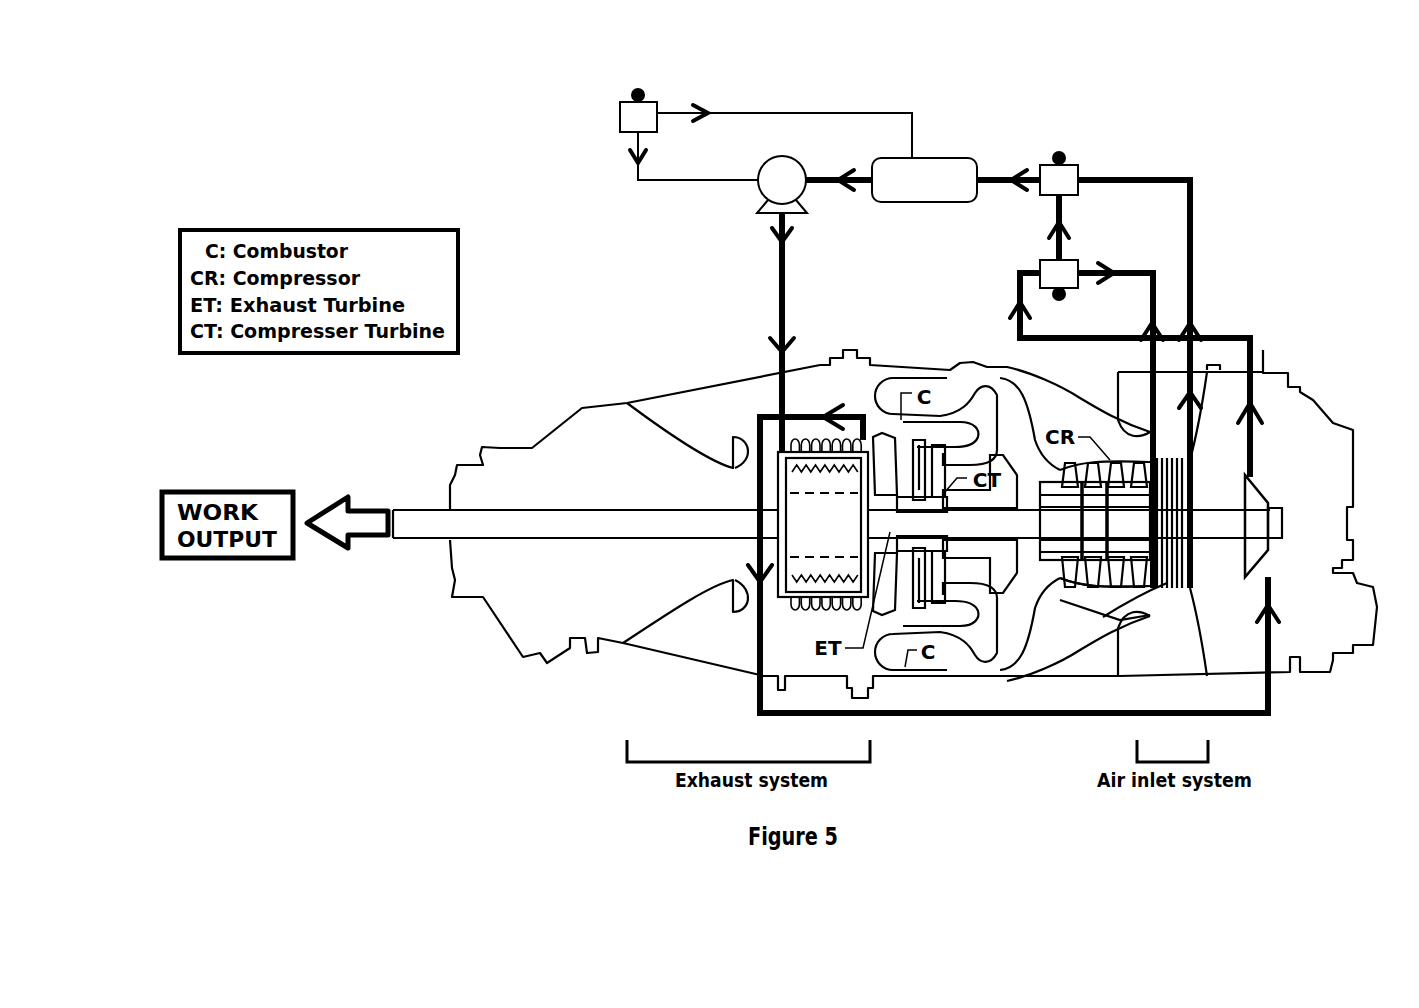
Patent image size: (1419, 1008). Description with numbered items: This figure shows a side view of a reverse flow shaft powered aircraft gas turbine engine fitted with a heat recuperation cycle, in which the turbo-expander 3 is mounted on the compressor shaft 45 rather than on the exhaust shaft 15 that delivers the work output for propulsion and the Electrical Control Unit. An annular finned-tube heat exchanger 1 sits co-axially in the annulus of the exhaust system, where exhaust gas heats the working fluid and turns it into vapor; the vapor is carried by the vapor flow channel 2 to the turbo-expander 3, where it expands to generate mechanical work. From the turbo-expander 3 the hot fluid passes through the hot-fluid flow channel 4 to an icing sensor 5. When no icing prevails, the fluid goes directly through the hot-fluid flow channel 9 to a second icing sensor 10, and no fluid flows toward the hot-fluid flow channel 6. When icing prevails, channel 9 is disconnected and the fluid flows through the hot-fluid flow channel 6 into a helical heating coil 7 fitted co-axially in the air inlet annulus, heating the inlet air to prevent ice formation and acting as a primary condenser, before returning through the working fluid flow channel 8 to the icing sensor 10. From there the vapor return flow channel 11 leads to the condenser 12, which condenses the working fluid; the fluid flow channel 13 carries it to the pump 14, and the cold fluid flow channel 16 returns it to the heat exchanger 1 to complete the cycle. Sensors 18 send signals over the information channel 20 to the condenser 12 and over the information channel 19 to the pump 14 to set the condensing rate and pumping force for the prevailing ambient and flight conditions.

The annular finned-tube heat exchanger 1 is at (850, 522).
The vapor flow channel 2 is at (757, 698).
The turbo-expander 3 is at (1260, 483).
The hot-fluid flow channel 4 is at (1017, 288).
The icing sensor 5 is at (1082, 262).
The hot-fluid flow channel 6 is at (1144, 285).
The helical heating coil 7 is at (1160, 590).
The working fluid flow channel 8 is at (1140, 178).
The hot-fluid flow channel 9 is at (1057, 247).
The icing sensor 10 is at (1078, 167).
The vapor return flow channel 11 is at (1013, 175).
The condenser 12 is at (920, 158).
The fluid flow channel 13 is at (834, 163).
The pump 14 is at (760, 165).
The exhaust shaft 15 is at (672, 508).
The cold fluid flow channel 16 is at (786, 332).
The sensors 18 is at (618, 117).
The information channel 19 is at (688, 183).
The information channel 20 is at (828, 113).
The compressor shaft 45 is at (1280, 543).